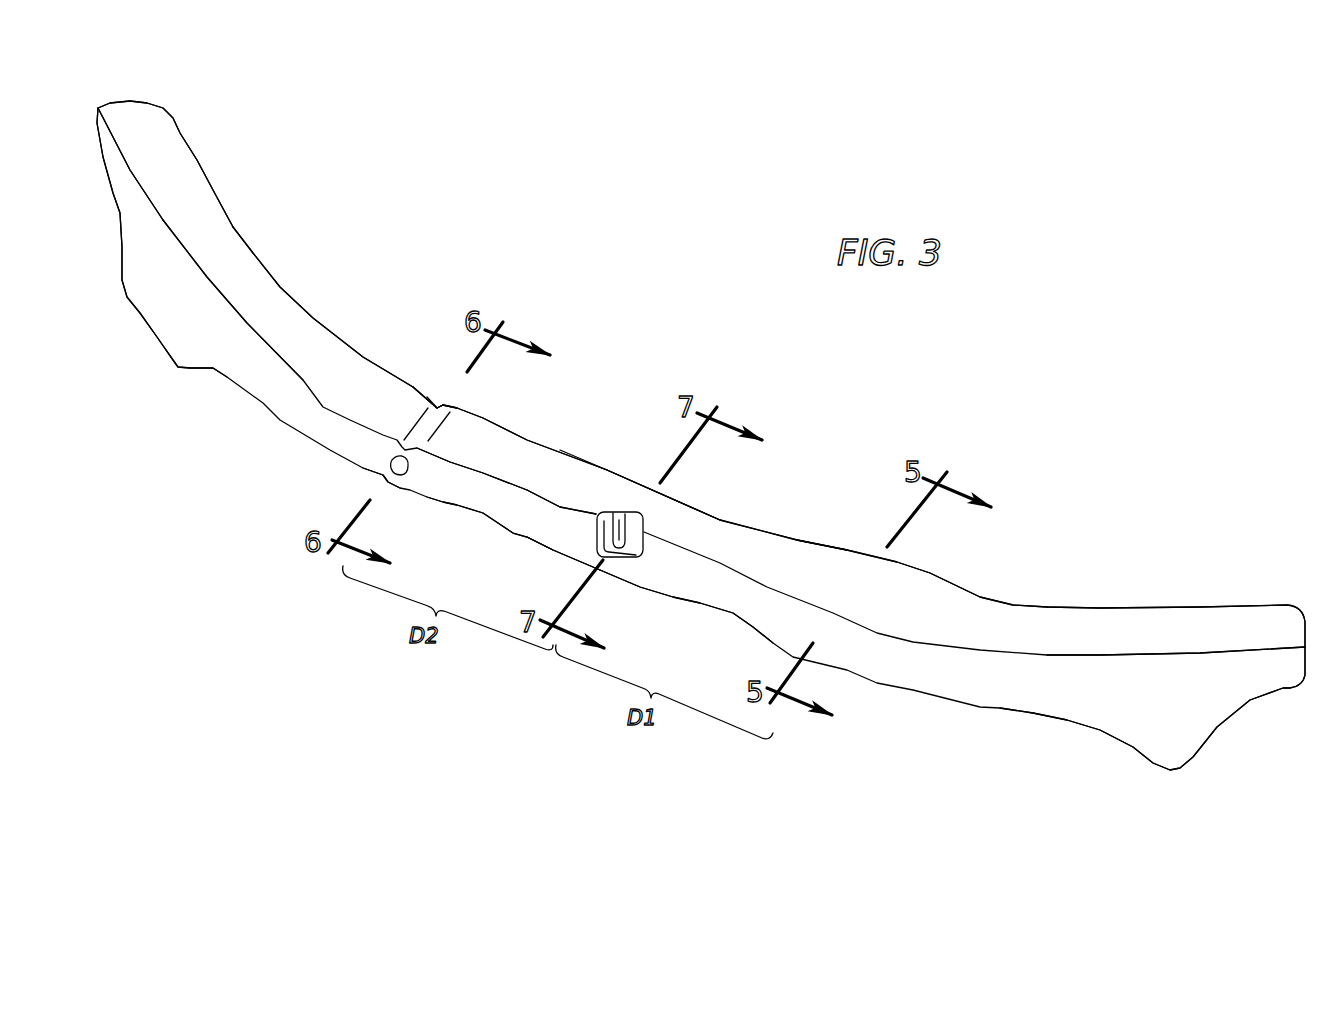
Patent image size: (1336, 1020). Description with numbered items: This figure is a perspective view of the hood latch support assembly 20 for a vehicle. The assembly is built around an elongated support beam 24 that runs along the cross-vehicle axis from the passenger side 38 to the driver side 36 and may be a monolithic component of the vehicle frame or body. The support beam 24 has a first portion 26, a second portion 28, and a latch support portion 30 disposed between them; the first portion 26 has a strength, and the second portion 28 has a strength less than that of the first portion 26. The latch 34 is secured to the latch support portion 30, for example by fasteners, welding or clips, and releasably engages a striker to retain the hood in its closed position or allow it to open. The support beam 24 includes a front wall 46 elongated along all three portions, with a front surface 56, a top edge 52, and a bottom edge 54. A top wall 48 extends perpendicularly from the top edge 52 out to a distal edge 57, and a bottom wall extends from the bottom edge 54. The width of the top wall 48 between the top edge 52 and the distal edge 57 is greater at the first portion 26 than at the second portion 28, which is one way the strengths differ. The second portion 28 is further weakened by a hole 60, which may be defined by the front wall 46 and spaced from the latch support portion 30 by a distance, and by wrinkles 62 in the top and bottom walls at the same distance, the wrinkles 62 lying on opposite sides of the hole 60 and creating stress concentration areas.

The hood latch support assembly 20 is at (556, 276).
The support beam 24 is at (267, 292).
The first portion 26 is at (830, 558).
The second portion 28 is at (435, 407).
The latch support portion 30 is at (607, 470).
The latch 34 is at (610, 563).
The driver side 36 is at (1103, 620).
The passenger side 38 is at (177, 138).
The front wall 46 is at (565, 522).
The top wall 48 is at (530, 460).
The top edge 52 is at (472, 470).
The bottom edge 54 is at (477, 512).
The front surface 56 is at (690, 580).
The distal edge 57 is at (733, 520).
The hole 60 is at (398, 476).
The wrinkles 62 is at (440, 407).